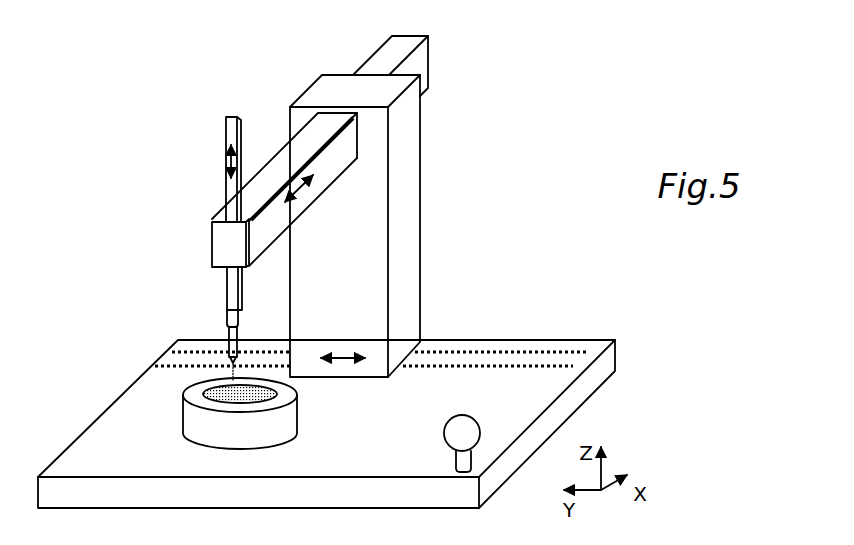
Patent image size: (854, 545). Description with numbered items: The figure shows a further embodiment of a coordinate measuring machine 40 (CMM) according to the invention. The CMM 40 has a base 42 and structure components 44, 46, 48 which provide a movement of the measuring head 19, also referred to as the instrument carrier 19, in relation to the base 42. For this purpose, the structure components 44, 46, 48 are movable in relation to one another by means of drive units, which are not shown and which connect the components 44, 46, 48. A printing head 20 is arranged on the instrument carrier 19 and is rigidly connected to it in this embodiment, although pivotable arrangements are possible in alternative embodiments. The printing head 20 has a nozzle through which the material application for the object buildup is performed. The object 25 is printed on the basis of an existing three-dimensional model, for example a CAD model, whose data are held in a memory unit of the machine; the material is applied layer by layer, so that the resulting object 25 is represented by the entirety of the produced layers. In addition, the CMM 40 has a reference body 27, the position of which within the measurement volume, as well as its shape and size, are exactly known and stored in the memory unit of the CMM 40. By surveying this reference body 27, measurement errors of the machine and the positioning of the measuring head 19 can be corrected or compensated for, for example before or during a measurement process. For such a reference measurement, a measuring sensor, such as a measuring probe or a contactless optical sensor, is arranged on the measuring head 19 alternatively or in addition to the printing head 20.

The measuring head 19 is at (228, 320).
The printing head 20 is at (230, 345).
The object 25 is at (193, 397).
The reference body 27 is at (468, 432).
The coordinate measuring machine 40 is at (341, 208).
The base 42 is at (517, 348).
The structure component 44 is at (402, 307).
The structure component 46 is at (310, 138).
The structure component 48 is at (232, 193).